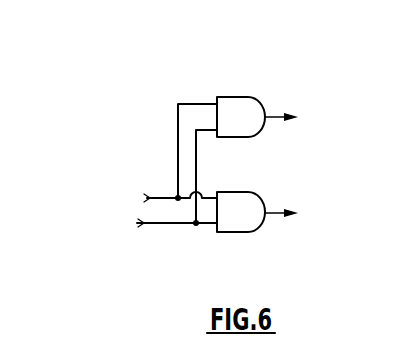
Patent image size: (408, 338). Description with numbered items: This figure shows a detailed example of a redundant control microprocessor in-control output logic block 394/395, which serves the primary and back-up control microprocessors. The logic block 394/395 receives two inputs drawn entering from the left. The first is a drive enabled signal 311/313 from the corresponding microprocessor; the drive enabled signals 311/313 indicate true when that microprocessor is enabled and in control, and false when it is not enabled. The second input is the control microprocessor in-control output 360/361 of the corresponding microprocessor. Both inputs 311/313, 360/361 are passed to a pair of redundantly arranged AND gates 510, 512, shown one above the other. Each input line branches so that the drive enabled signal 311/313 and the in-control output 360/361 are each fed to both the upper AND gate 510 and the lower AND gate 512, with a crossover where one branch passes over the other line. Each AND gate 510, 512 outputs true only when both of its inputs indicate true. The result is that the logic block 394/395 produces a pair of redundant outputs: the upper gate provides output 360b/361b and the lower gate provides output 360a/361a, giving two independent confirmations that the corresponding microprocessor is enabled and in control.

The in-control output logic block 394 is at (221, 151).
The in-control output logic block 395 is at (221, 151).
The drive enabled signal 311 is at (133, 178).
The drive enabled signal 313 is at (145, 198).
The control microprocessor in-control output 360 is at (127, 248).
The control microprocessor in-control output 361 is at (137, 223).
The AND gate 510 is at (230, 97).
The AND gate 512 is at (237, 232).
The redundant output 360b is at (335, 120).
The redundant output 361b is at (335, 120).
The redundant output 360a is at (335, 214).
The redundant output 361a is at (335, 214).